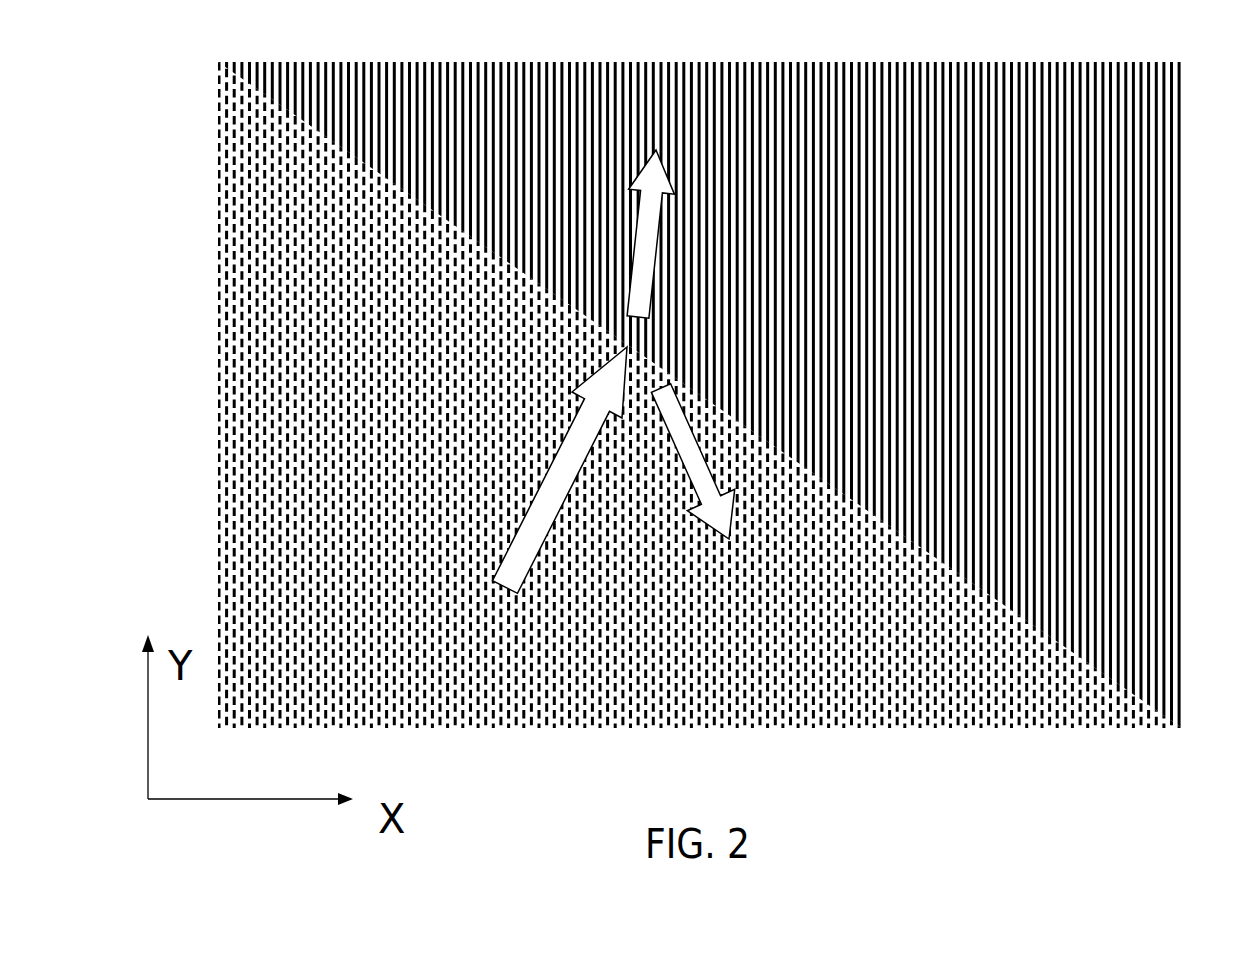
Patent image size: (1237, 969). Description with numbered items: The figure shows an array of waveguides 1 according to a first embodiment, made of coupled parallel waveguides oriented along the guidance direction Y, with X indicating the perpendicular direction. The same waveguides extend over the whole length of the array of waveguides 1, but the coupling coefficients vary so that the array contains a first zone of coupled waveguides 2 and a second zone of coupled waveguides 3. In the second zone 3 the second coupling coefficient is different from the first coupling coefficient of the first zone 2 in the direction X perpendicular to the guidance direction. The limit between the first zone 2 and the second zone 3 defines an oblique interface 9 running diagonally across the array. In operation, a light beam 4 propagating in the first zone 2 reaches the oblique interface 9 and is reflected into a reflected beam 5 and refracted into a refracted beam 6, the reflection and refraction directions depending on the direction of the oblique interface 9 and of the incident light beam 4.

The array of waveguides 1 is at (669, 412).
The first zone of coupled waveguides 2 is at (250, 544).
The second zone of coupled waveguides 3 is at (945, 119).
The light beam 4 is at (536, 572).
The reflected beam 5 is at (642, 240).
The refracted beam 6 is at (731, 542).
The oblique interface 9 is at (305, 125).